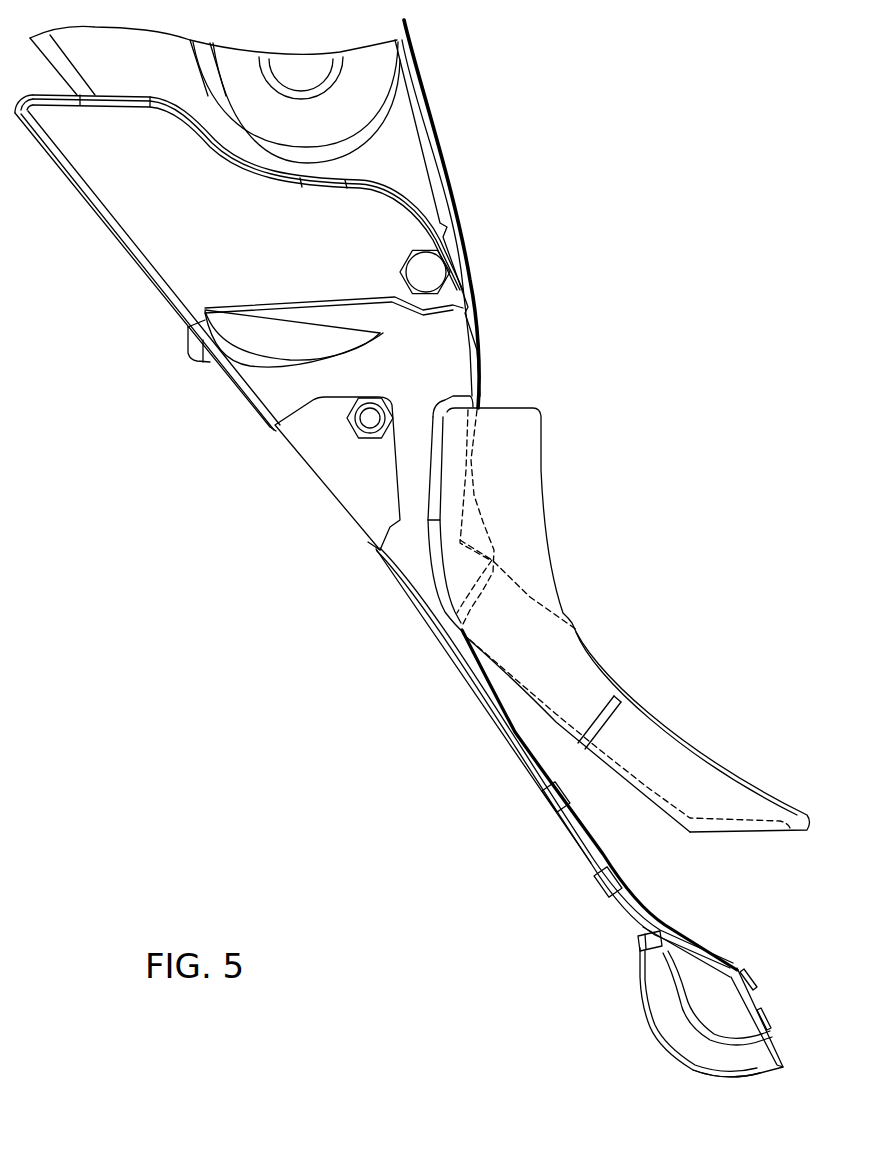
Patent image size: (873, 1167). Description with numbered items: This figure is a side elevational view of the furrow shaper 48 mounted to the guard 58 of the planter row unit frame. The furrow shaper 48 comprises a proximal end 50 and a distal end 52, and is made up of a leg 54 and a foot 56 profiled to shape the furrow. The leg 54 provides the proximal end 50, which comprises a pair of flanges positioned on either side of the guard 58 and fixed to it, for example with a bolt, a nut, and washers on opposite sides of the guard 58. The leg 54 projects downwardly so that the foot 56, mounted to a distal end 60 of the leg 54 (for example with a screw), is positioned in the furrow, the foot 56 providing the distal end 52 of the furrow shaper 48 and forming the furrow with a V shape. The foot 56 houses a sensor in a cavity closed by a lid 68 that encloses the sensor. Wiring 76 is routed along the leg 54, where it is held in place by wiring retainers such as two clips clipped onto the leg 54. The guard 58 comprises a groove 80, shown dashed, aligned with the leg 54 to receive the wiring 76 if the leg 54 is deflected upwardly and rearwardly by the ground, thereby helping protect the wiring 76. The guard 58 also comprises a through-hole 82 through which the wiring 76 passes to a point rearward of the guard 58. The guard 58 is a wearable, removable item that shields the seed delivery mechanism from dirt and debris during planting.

The furrow shaper 48 is at (490, 799).
The proximal end 50 is at (305, 452).
The distal end 52 is at (730, 1080).
The leg 54 is at (418, 618).
The foot 56 is at (640, 978).
The guard 58 is at (668, 688).
The distal end of the leg 60 is at (645, 915).
The lid 68 is at (762, 1007).
The wiring 76 is at (594, 840).
The groove 80 is at (617, 768).
The through-hole 82 is at (492, 560).